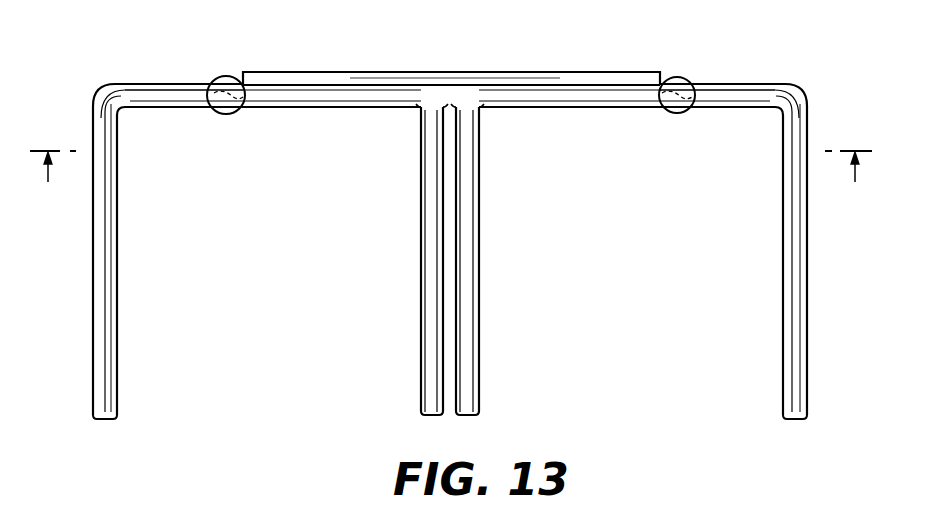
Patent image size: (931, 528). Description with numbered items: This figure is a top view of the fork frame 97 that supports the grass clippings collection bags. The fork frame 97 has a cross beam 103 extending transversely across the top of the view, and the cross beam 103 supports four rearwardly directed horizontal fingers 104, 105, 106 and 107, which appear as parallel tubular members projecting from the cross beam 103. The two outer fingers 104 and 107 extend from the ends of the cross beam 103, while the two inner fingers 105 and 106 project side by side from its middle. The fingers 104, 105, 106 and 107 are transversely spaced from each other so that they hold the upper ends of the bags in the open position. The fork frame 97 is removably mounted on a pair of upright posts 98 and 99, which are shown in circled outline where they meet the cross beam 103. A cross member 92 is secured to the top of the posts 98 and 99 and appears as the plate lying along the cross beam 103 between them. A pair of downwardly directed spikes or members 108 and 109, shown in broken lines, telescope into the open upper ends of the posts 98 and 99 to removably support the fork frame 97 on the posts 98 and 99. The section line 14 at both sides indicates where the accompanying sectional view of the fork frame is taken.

The section line 14- 14 is at (451, 180).
The cross member 92 is at (420, 77).
The fork frame 97 is at (578, 86).
The upright post 98 is at (216, 78).
The upright post 99 is at (686, 80).
The cross beam 103 is at (289, 97).
The horizontal finger 104 is at (106, 284).
The horizontal finger 105 is at (428, 252).
The horizontal finger 106 is at (473, 233).
The horizontal finger 107 is at (794, 262).
The downwardly directed spike 108 is at (247, 110).
The downwardly directed spike 109 is at (664, 100).